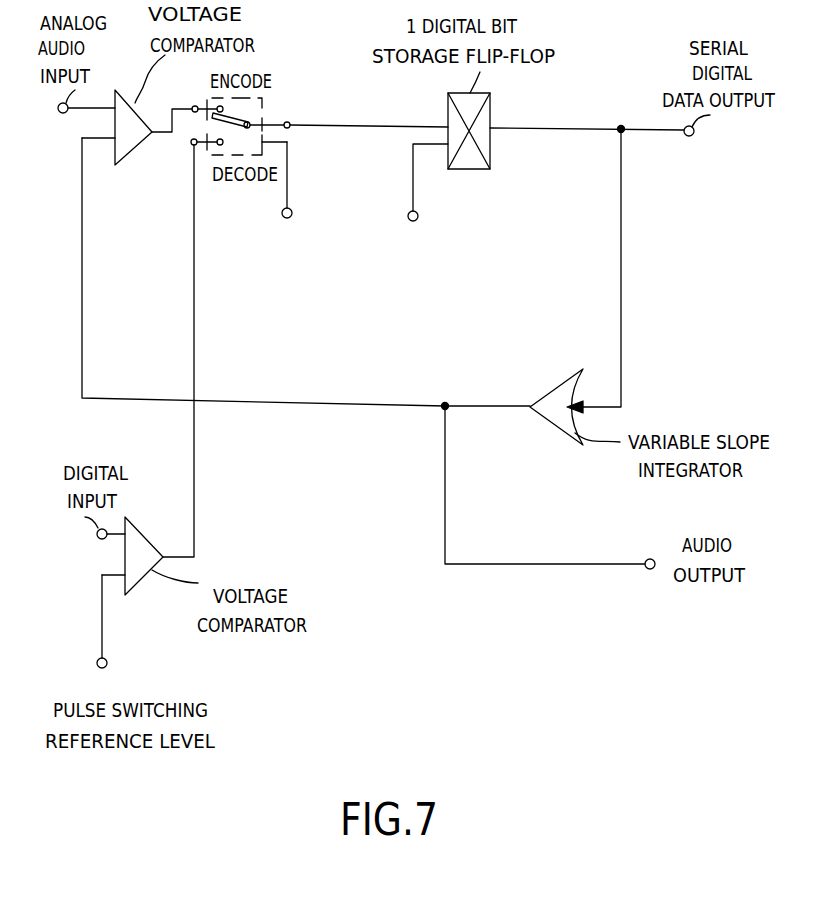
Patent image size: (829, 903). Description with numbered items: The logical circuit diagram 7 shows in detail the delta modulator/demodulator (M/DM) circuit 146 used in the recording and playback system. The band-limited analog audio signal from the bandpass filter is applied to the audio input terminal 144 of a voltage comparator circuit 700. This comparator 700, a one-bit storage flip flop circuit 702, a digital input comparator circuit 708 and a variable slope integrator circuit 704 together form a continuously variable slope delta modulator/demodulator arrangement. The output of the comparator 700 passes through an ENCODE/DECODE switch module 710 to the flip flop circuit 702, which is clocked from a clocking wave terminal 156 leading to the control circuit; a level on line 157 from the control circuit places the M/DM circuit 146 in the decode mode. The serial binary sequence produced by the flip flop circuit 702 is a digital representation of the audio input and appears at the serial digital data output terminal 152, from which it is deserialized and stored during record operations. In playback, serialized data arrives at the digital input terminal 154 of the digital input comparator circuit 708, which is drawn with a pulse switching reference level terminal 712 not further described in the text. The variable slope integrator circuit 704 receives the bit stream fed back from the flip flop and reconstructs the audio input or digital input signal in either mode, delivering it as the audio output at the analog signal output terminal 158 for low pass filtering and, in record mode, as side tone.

The audio input terminal 144 is at (59, 112).
The voltage comparator circuit 700 is at (131, 148).
The encode switch 7 is at (273, 102).
The ENCODE/DECODE switch module 710 is at (265, 144).
The line 157 is at (285, 218).
The flip flop circuit 702 is at (473, 165).
The clocking wave terminal 156 is at (416, 221).
The serial data output terminal 152 is at (693, 135).
The delta modulator/demodulator (M/DM) circuit 146 is at (397, 336).
The variable slope integrator circuit 704 is at (561, 388).
The analog signal output terminal 158 is at (652, 570).
The digital input terminal 154 is at (98, 540).
The digital input comparator circuit 708 is at (136, 588).
The pulse switching reference level terminal 712 is at (108, 665).